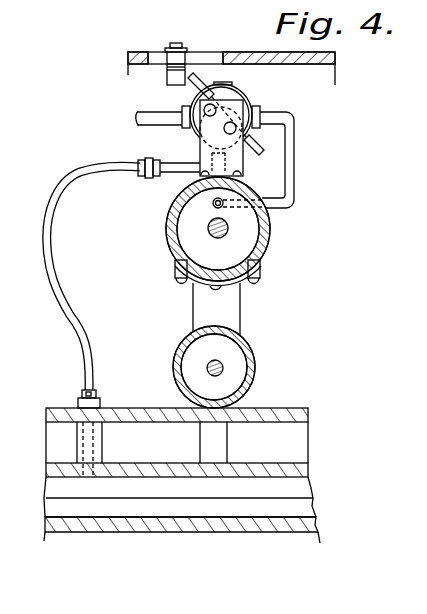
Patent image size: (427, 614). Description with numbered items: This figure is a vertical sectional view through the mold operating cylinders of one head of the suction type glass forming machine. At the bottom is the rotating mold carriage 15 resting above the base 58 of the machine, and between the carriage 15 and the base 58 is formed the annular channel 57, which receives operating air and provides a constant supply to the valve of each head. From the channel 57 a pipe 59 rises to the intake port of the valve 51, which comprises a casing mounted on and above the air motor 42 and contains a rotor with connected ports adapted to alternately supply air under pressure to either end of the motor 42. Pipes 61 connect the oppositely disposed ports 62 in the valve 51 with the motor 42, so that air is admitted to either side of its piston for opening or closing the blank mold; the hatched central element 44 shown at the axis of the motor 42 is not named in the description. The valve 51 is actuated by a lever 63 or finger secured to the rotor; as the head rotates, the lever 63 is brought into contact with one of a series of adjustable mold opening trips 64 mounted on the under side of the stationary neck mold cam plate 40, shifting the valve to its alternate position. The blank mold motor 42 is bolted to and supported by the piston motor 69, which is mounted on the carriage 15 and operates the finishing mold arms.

The neck mold cam plate 40 is at (307, 65).
The adjustable mold opening trip 64 is at (171, 81).
The lever 63 is at (199, 83).
The valve 51 is at (226, 100).
The ports 62 is at (184, 114).
The pipes 61 is at (139, 124).
The hub 44 is at (208, 231).
The air motor 42 is at (267, 234).
The pipe 59 is at (70, 299).
The piston motor 69 is at (257, 356).
The mold carriage 15 is at (310, 413).
The annular channel 57 is at (295, 490).
The base 58 is at (297, 527).